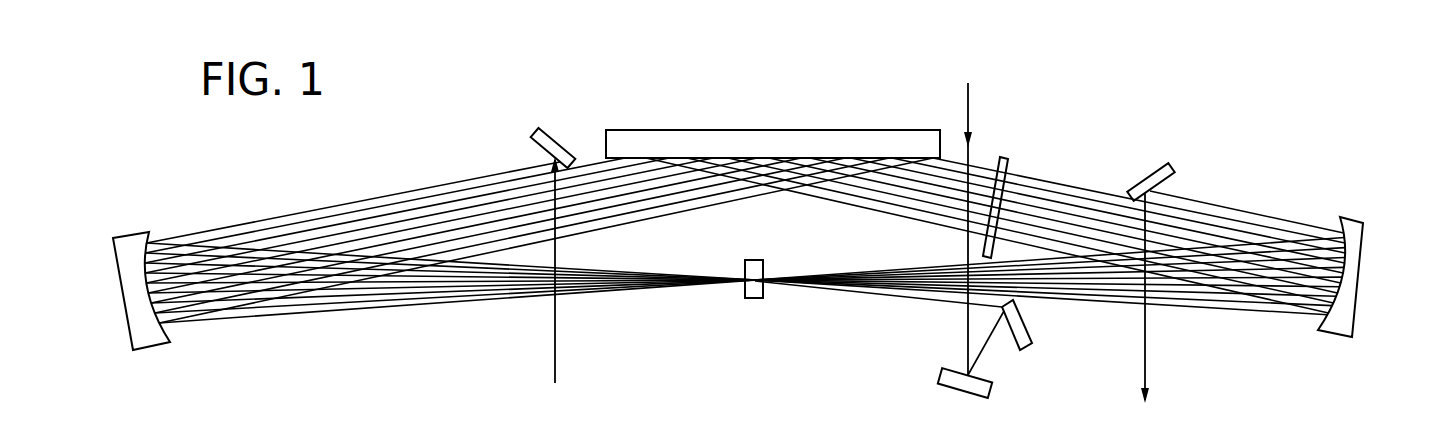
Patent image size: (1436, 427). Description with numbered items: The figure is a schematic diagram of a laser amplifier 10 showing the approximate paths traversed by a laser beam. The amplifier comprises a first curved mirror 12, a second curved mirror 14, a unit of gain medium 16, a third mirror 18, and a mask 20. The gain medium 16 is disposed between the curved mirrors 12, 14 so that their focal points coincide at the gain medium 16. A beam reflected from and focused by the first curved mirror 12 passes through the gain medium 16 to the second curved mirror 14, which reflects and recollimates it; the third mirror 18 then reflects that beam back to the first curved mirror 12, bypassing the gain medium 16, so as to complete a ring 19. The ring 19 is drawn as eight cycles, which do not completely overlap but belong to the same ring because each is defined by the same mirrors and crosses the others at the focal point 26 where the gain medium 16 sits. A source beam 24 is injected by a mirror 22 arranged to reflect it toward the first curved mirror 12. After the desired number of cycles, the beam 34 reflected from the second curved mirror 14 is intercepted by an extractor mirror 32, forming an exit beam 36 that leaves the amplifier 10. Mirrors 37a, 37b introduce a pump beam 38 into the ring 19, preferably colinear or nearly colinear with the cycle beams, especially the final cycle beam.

The laser amplifier 10 is at (1137, 144).
The first curved mirror 12 is at (135, 313).
The second curved mirror 14 is at (1358, 263).
The gain medium 16 is at (753, 262).
The third mirror 18 is at (680, 131).
The ring 19 is at (290, 240).
The mask 20 is at (1010, 168).
The mirror 22 is at (557, 133).
The source beam 24 is at (555, 361).
The focal point 26 is at (763, 283).
The extractor mirror 32 is at (1163, 188).
The beam 34 is at (1250, 213).
The exit beam 36 is at (1145, 358).
The mirror 37a is at (958, 393).
The mirror 37b is at (1030, 328).
The pump beam 38 is at (968, 108).